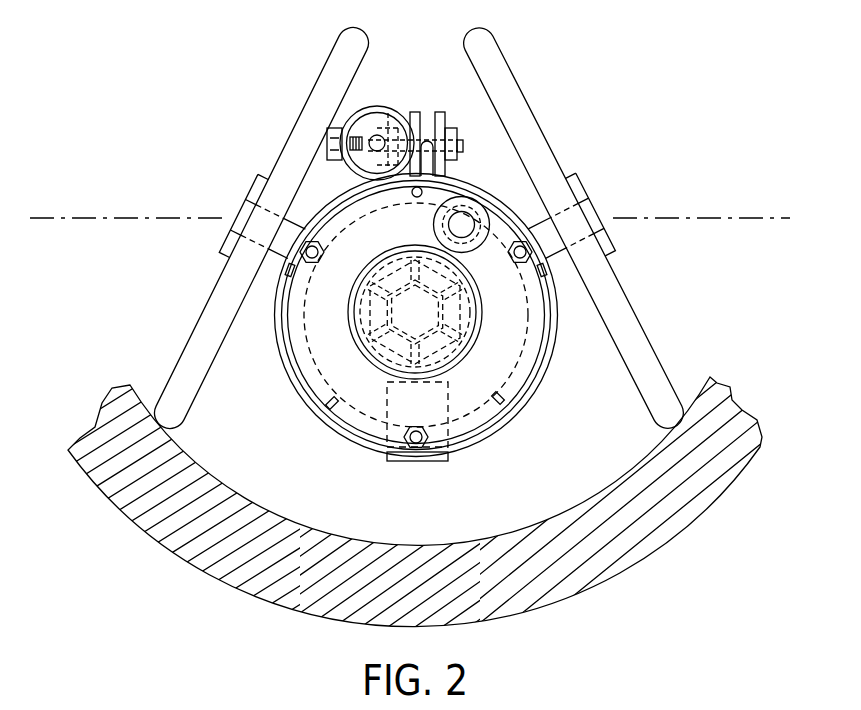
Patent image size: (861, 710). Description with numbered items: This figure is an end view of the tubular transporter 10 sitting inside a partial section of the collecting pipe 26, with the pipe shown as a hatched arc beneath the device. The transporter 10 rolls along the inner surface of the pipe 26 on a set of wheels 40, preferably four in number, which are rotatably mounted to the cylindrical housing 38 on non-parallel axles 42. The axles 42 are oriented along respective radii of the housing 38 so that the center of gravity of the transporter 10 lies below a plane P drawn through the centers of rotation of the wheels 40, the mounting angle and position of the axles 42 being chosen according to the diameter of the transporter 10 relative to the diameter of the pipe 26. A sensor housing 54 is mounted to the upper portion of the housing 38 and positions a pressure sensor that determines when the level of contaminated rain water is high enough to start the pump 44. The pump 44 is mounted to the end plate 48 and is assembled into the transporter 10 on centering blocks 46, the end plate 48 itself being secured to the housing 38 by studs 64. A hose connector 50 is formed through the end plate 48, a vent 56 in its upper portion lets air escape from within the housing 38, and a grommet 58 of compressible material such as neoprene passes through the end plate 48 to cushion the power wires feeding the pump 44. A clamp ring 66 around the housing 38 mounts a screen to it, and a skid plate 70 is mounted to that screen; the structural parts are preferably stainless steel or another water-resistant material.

The tubular transporter 10 is at (233, 89).
The collecting pipe 26 is at (188, 470).
The housing 38 is at (542, 377).
The wheels 40 is at (188, 342).
The axles 42 is at (248, 201).
The pump 44 is at (508, 397).
The centering blocks 46 is at (343, 428).
The end plate 48 is at (474, 378).
The hose connector 50 is at (476, 277).
The sensor housing 54 is at (383, 108).
The vent 56 is at (414, 199).
The grommet 58 is at (477, 212).
The studs 64 is at (424, 443).
The clamp ring 66 is at (287, 378).
The skid plate 70 is at (489, 438).
The plane P is at (684, 216).